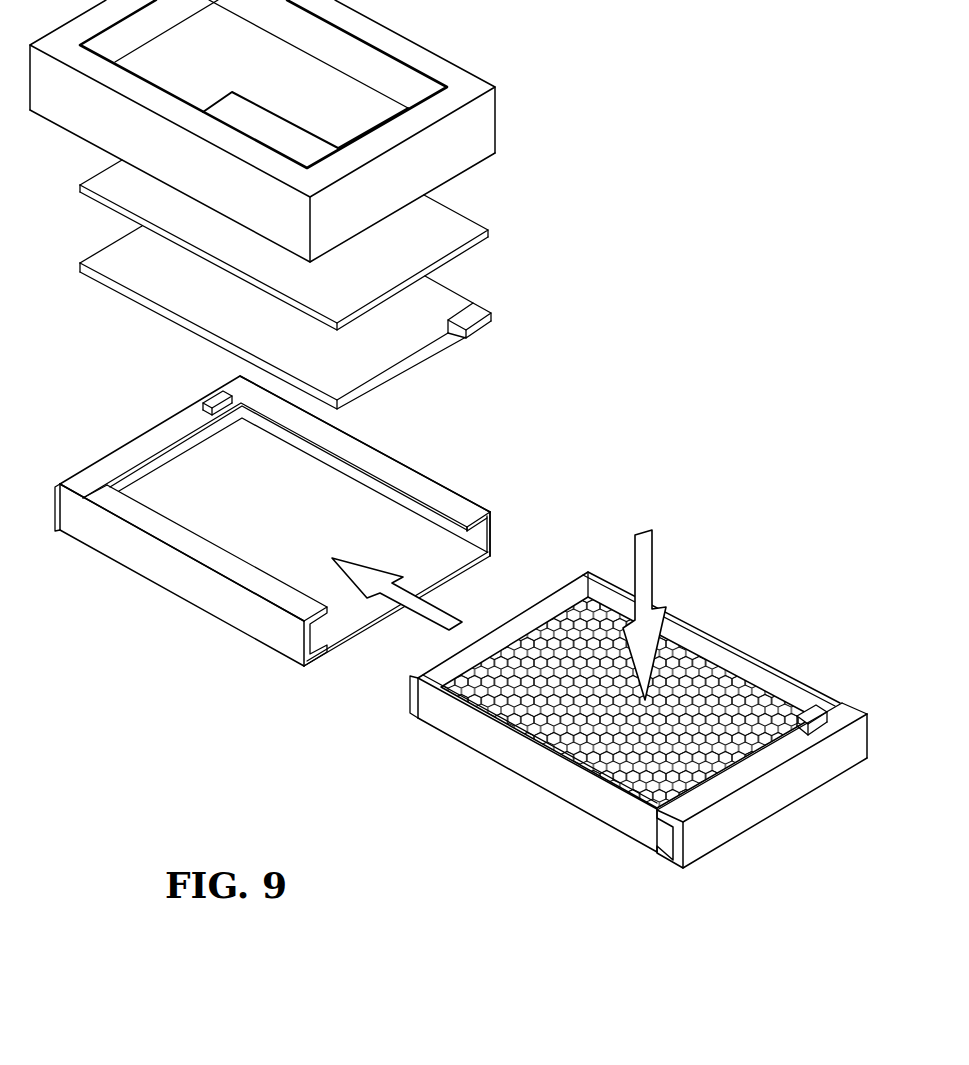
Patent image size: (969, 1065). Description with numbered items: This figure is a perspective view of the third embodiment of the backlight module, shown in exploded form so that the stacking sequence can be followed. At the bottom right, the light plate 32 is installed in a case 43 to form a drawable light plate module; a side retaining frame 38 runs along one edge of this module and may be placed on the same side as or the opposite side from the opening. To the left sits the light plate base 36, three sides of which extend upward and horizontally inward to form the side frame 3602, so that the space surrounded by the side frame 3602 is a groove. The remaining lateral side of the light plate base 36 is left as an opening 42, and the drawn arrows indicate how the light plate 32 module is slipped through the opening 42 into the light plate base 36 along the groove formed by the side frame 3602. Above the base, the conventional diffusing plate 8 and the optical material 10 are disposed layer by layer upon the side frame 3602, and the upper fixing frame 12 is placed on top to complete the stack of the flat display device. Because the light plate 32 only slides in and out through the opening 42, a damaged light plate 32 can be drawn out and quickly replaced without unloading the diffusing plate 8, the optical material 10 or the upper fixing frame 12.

The diffusing plate 8 is at (478, 300).
The optical material 10 is at (468, 231).
The upper fixing frame 12 is at (485, 132).
The light plate 32 is at (727, 716).
The light plate base 36 is at (305, 544).
The side frame 3602 is at (434, 494).
The side retaining frame 38 is at (780, 803).
The opening 42 is at (338, 598).
The case 43 is at (640, 720).